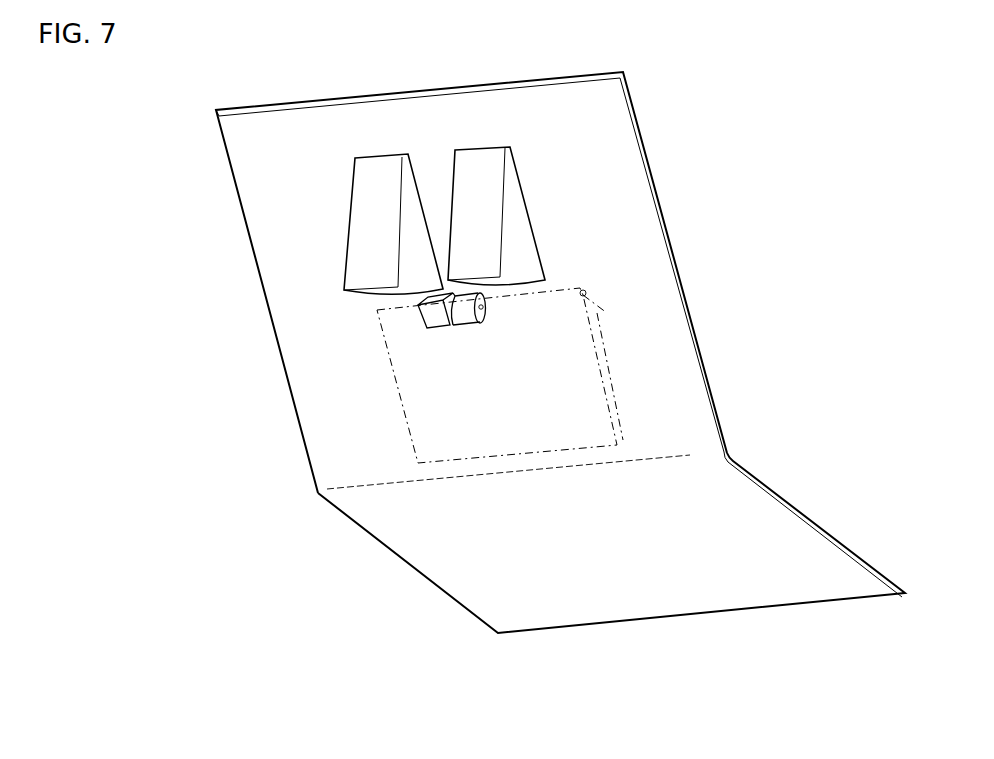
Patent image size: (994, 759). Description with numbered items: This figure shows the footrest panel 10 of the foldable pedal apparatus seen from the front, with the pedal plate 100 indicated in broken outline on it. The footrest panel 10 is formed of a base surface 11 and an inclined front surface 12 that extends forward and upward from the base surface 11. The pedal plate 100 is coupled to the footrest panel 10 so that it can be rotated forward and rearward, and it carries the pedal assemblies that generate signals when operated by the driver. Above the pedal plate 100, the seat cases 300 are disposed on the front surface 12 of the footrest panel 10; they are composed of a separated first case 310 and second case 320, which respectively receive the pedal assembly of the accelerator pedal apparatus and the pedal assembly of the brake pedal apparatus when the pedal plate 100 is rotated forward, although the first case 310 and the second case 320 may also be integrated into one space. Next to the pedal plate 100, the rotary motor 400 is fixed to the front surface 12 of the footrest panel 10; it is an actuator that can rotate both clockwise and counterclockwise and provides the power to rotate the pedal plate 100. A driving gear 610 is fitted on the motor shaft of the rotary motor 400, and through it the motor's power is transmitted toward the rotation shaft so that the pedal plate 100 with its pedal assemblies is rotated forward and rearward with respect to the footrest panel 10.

The footrest panel 10 is at (560, 400).
The base surface 11 is at (622, 578).
The front surface 12 is at (617, 153).
The pedal plate 100 is at (443, 385).
The seat cases 300 is at (451, 220).
The first case 310 is at (370, 230).
The second case 320 is at (487, 215).
The rotary motor 400 is at (437, 315).
The driving gear 610 is at (468, 315).